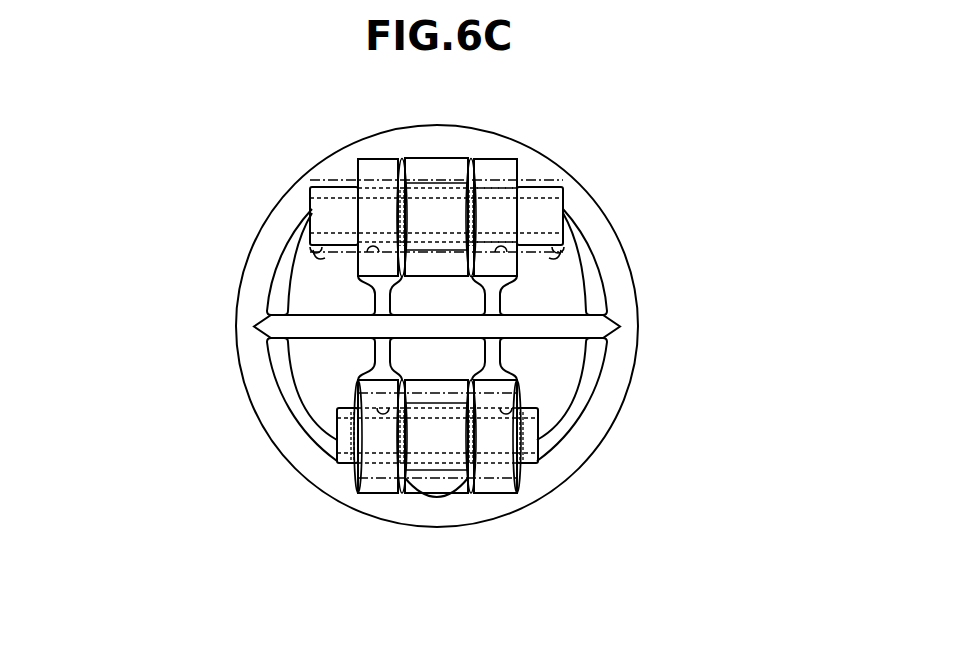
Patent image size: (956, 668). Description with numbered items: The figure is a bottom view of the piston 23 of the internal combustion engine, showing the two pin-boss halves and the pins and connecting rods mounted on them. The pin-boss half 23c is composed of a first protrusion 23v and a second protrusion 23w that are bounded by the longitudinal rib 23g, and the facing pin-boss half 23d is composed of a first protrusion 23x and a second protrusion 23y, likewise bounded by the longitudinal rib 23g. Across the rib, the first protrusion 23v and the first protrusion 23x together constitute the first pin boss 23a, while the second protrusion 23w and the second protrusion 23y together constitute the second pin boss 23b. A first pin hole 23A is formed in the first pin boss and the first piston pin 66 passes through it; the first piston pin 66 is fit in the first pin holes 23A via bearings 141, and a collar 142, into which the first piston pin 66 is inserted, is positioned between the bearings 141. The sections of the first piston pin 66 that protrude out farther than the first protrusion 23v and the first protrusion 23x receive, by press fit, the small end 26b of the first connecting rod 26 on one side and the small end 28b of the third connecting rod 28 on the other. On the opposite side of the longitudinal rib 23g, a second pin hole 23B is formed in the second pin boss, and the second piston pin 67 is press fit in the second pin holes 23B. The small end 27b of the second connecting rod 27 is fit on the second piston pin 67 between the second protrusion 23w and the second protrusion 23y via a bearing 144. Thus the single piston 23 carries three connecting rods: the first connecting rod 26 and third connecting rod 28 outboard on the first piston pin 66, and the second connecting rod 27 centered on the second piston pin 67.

The piston 23 is at (243, 250).
The first connecting rod 26 is at (307, 171).
The pin-boss half 23c is at (356, 156).
The first protrusion 23v is at (386, 165).
The collar 142 is at (437, 173).
The first protrusion 23x is at (490, 165).
The pin-boss half 23d is at (518, 158).
The first piston pin 66 is at (318, 186).
The first pin boss 23a is at (519, 167).
The third connecting rod 28 is at (566, 183).
The small end 26b is at (305, 235).
The small end 28b is at (572, 253).
The first pin hole 23A is at (303, 255).
The bearing 141 is at (368, 256).
The longitudinal rib 23g is at (255, 326).
The second pin hole 23B is at (383, 410).
The second piston pin 67 is at (338, 438).
The second pin boss 23b is at (523, 480).
The second protrusion 23y is at (500, 492).
The second protrusion 23w is at (362, 490).
The second connecting rod 27 is at (425, 482).
The small end 27b is at (448, 482).
The bearing 144 is at (455, 482).